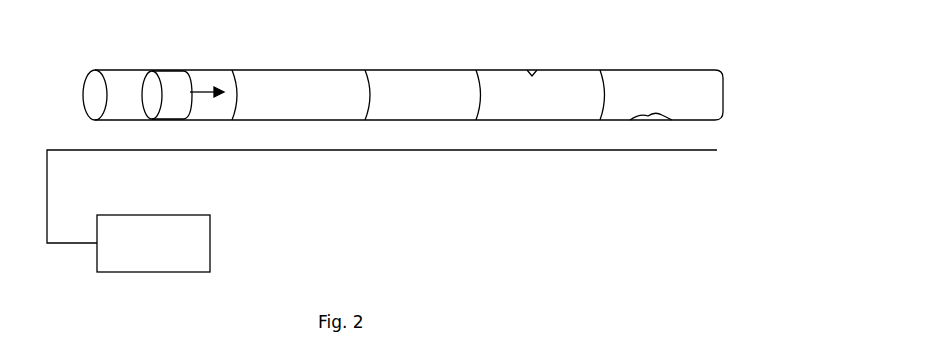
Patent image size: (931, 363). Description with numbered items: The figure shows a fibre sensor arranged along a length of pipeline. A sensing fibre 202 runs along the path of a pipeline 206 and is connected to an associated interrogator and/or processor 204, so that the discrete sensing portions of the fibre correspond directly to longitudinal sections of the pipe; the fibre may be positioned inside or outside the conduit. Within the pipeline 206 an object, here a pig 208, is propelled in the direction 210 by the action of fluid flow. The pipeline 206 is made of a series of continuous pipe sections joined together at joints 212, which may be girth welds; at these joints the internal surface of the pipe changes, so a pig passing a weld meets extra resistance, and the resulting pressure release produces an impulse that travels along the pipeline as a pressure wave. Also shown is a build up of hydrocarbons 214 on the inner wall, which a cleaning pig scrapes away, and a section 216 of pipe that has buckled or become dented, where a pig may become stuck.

The sensing fibre 202 is at (485, 151).
The interrogator and/or processor 204 is at (130, 273).
The pipeline 206 is at (663, 70).
The pig 208 is at (167, 80).
The direction 210 is at (207, 90).
The joints 212 is at (370, 84).
The build up of hydrocarbons 214 is at (662, 120).
The section 216 is at (533, 73).